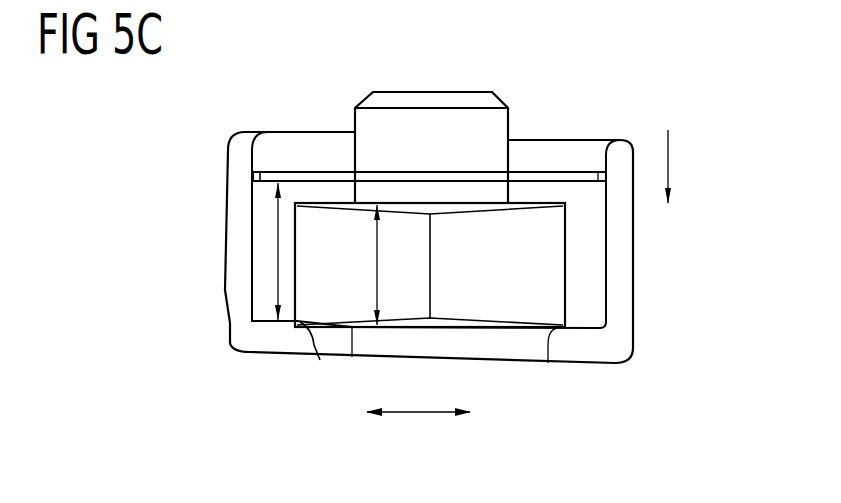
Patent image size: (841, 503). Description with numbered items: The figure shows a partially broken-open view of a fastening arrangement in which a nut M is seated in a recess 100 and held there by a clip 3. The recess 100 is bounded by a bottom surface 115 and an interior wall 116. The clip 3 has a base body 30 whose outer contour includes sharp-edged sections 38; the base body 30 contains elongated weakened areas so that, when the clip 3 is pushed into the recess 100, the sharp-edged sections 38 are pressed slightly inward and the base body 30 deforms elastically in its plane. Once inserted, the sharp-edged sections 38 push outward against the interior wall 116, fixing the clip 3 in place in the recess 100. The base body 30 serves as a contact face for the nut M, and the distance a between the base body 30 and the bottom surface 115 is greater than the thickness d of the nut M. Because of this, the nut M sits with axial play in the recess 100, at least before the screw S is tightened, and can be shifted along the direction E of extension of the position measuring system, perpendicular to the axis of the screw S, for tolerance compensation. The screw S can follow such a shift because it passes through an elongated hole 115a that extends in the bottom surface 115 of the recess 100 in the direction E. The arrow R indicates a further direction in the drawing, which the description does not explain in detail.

The clip 3 is at (557, 168).
The base body 30 is at (313, 171).
The sharp-edged section 38 is at (253, 172).
The recess 100 is at (602, 281).
The bottom surface 115 is at (583, 323).
The elongated hole 115a is at (313, 345).
The interior wall 116 is at (250, 291).
The screw S is at (420, 137).
The nut M is at (492, 297).
The direction R is at (679, 167).
The direction of extension E is at (418, 394).
The distance a is at (270, 251).
The thickness d is at (368, 265).